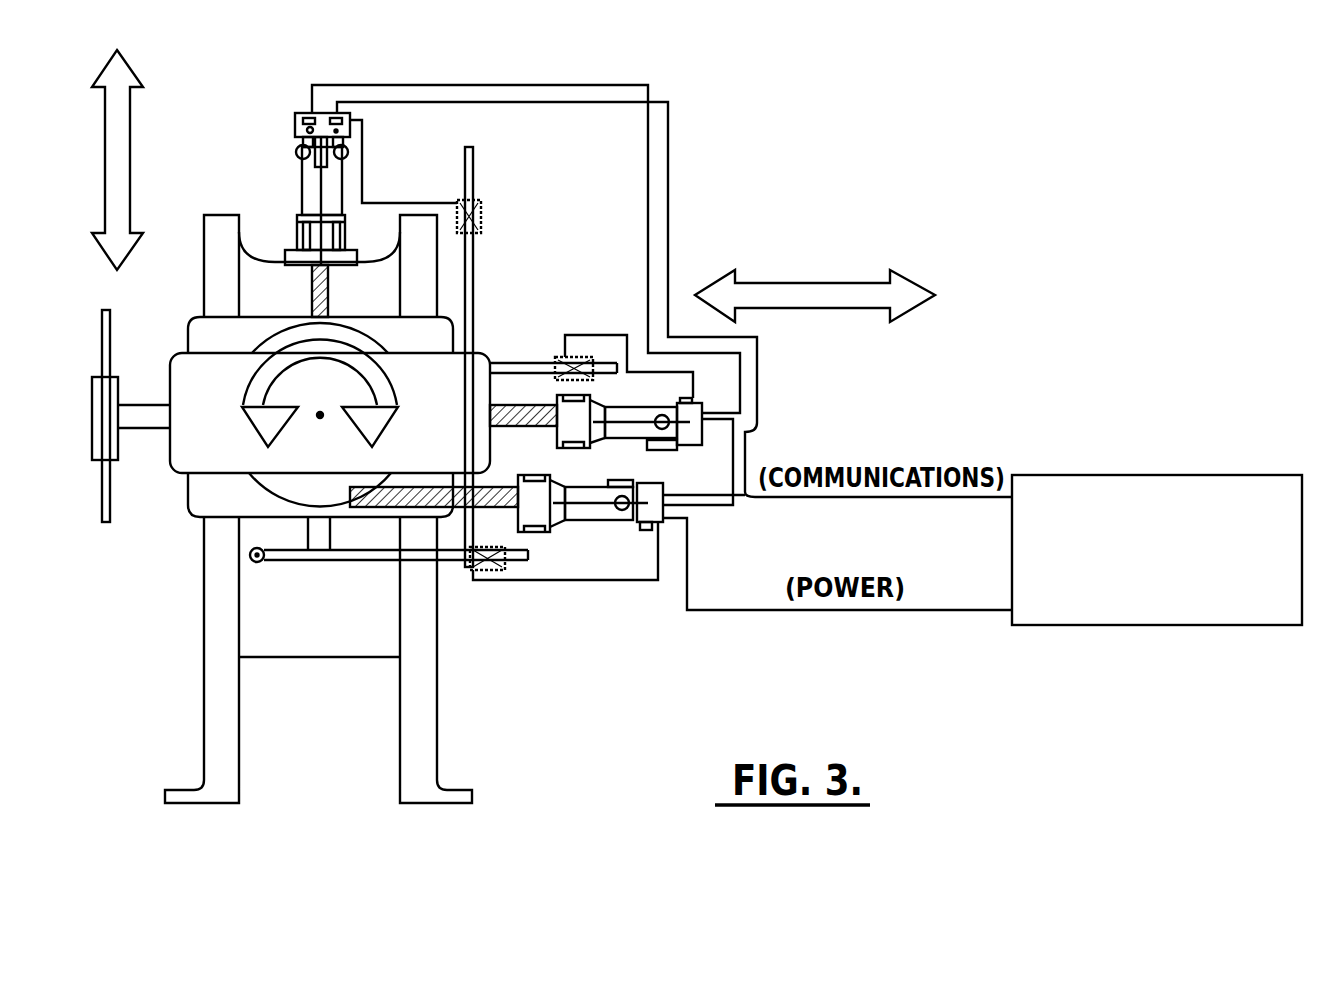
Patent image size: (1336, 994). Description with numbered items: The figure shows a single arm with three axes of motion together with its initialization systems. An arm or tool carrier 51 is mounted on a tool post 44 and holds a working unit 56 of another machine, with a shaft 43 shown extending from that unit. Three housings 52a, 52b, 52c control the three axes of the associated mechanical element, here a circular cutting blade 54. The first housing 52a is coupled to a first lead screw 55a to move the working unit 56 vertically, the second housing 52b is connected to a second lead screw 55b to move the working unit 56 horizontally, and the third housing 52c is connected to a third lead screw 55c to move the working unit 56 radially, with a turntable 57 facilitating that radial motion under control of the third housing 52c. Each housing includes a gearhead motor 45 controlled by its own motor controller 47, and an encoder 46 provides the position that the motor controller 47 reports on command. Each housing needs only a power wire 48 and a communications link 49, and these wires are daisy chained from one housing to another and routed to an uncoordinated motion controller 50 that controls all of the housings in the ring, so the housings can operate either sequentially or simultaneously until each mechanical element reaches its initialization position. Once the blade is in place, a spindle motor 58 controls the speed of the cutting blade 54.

The handwheel shaft 43 is at (150, 430).
The tool post 44 is at (368, 780).
The gearhead motor 45 is at (298, 232).
The encoder 46 is at (482, 220).
The motor controller 47 is at (297, 114).
The power wire 48 is at (648, 192).
The communications link 49 is at (668, 194).
The uncoordinated motion controller 50 is at (1230, 627).
The tool carrier 51 is at (198, 515).
The first housing 52a is at (290, 172).
The second housing 52b is at (670, 457).
The third housing 52c is at (612, 530).
The circular cutting blade 54 is at (112, 345).
The first lead screw 55a is at (312, 292).
The second lead screw 55b is at (505, 376).
The third lead screw 55c is at (390, 506).
The working unit 56 is at (190, 552).
The turntable 57 is at (302, 505).
The spindle motor 58 is at (422, 404).